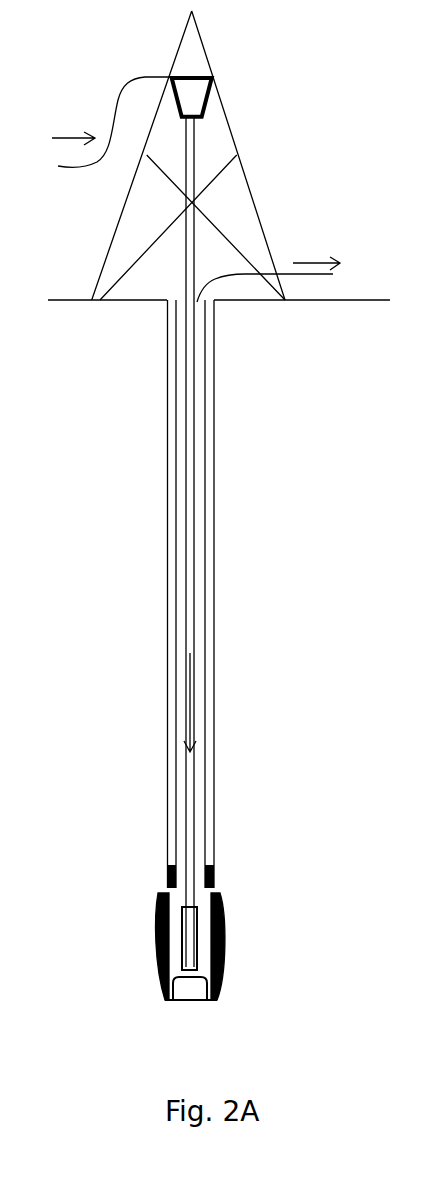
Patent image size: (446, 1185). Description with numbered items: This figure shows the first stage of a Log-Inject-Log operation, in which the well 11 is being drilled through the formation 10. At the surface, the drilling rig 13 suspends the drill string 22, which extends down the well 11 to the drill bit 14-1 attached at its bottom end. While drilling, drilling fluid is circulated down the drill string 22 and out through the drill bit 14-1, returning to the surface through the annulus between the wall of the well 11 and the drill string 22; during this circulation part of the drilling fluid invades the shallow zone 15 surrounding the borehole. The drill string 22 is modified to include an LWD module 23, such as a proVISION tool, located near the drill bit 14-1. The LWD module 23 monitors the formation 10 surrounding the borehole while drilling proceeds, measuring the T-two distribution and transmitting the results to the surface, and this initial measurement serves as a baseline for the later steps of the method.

The formation 10 is at (284, 716).
The well 11 is at (218, 572).
The drilling rig 13 is at (266, 95).
The drill string 22 is at (183, 267).
The shallow zone 15 is at (225, 936).
The LWD module 23 is at (182, 925).
The drill bit 14-1 is at (182, 989).